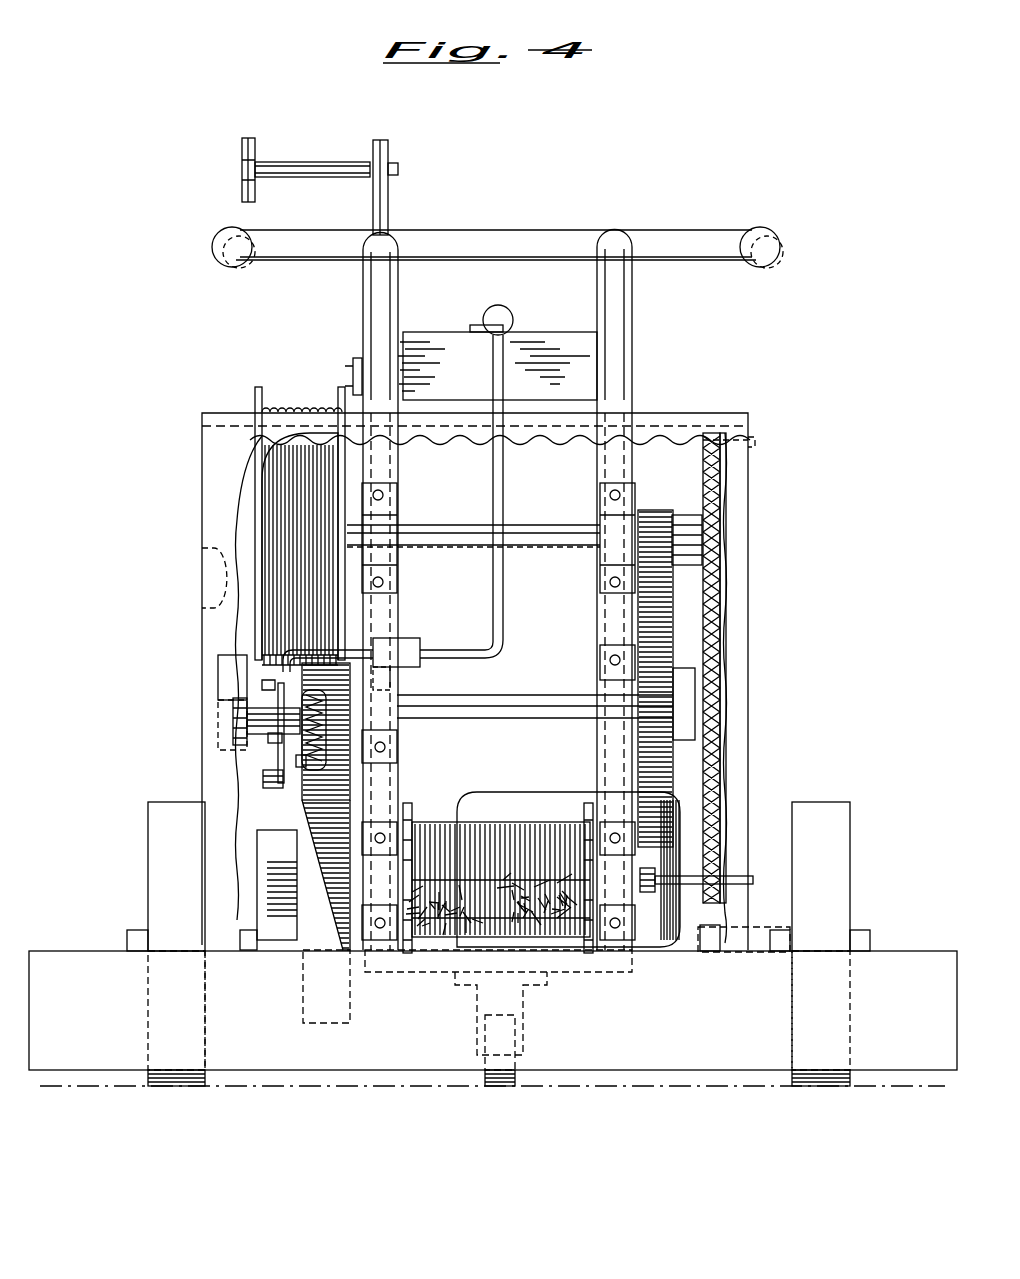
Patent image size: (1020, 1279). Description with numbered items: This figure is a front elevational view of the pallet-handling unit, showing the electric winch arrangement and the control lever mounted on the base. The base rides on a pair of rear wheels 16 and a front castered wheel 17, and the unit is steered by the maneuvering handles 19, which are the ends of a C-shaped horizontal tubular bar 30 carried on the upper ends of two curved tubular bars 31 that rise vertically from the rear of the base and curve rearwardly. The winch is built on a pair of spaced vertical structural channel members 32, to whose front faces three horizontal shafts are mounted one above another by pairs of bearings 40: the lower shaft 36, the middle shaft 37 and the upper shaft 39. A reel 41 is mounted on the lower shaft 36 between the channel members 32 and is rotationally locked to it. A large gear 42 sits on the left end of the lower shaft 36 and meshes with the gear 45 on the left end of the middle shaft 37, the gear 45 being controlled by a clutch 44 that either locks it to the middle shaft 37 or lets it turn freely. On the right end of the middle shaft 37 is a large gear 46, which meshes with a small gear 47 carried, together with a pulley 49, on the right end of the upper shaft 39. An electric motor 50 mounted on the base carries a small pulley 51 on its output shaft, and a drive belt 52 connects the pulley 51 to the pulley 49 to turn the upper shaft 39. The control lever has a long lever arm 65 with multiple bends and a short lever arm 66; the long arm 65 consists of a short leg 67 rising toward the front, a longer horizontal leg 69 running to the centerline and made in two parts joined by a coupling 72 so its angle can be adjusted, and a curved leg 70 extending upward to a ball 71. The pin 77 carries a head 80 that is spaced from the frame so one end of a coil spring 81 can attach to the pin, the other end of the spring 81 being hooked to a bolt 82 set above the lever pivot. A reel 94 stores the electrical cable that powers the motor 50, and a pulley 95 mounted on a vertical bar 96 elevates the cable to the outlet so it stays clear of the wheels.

The rear wheels 16 is at (838, 868).
The front castered wheel 17 is at (150, 1083).
The maneuvering handles 19 is at (216, 240).
The tubular bar 30 is at (680, 232).
The curved tubular bars 31 is at (363, 296).
The structural channel members 32 is at (393, 457).
The lower shaft 36 is at (668, 822).
The middle shaft 37 is at (655, 648).
The upper shaft 39 is at (517, 533).
The bearings 40 is at (613, 520).
The reel 41 is at (448, 927).
The large gear 42 is at (337, 882).
The clutch 44 is at (255, 682).
The gear 45 is at (303, 712).
The large gear 46 is at (685, 700).
The small gear 47 is at (672, 516).
The pulley 49 is at (720, 575).
The electric motor 50 is at (672, 935).
The small pulley 51 is at (720, 840).
The drive belt 52 is at (712, 718).
The long lever arm 65 is at (522, 621).
The short lever arm 66 is at (277, 738).
The short leg 67 is at (287, 673).
The horizontal leg 69 is at (488, 660).
The curved leg 70 is at (505, 497).
The ball 71 is at (512, 318).
The coupling 72 is at (413, 640).
The pin 77 is at (263, 778).
The head 80 is at (352, 787).
The coil spring 81 is at (300, 763).
The bolt 82 is at (283, 687).
The reel 94 is at (300, 495).
The pulley 95 is at (243, 170).
The vertical bar 96 is at (388, 200).